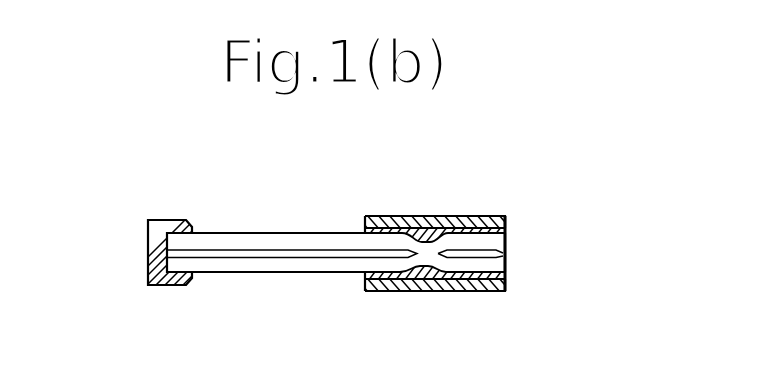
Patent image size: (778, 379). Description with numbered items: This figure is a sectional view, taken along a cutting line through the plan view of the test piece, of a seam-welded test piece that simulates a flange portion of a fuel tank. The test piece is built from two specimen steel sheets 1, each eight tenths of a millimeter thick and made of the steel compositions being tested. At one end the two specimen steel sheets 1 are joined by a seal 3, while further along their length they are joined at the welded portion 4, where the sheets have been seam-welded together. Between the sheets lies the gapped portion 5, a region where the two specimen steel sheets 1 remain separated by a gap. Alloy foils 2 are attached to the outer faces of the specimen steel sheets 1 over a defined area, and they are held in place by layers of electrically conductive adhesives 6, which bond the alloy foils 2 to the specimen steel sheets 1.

The specimen steel sheets 1 is at (253, 248).
The alloy foils 2 is at (443, 254).
The seal 3 is at (146, 286).
The welded portion 4 is at (427, 264).
The gapped portion 5 is at (476, 245).
The layers of electrically conductive adhesives 6 is at (363, 231).